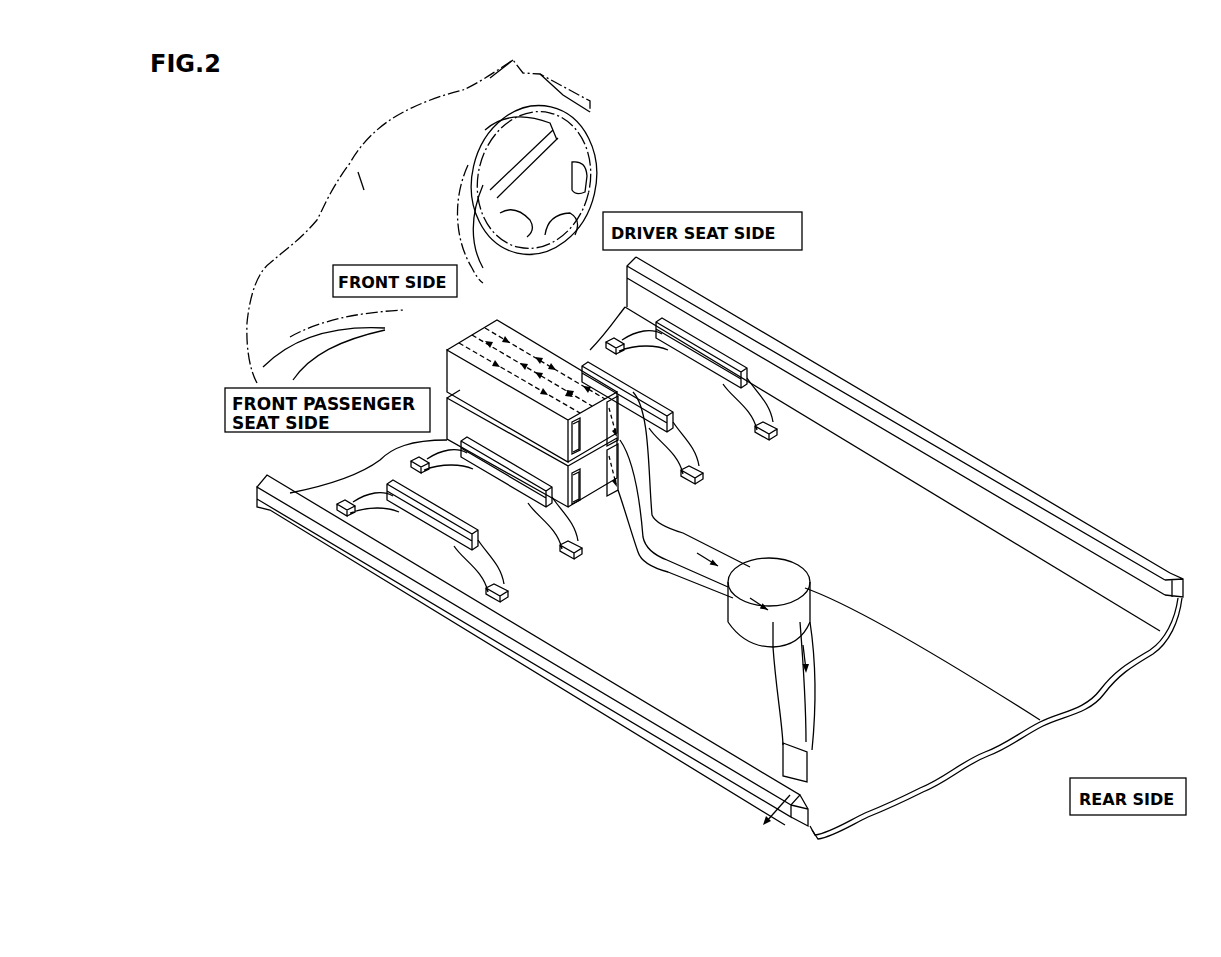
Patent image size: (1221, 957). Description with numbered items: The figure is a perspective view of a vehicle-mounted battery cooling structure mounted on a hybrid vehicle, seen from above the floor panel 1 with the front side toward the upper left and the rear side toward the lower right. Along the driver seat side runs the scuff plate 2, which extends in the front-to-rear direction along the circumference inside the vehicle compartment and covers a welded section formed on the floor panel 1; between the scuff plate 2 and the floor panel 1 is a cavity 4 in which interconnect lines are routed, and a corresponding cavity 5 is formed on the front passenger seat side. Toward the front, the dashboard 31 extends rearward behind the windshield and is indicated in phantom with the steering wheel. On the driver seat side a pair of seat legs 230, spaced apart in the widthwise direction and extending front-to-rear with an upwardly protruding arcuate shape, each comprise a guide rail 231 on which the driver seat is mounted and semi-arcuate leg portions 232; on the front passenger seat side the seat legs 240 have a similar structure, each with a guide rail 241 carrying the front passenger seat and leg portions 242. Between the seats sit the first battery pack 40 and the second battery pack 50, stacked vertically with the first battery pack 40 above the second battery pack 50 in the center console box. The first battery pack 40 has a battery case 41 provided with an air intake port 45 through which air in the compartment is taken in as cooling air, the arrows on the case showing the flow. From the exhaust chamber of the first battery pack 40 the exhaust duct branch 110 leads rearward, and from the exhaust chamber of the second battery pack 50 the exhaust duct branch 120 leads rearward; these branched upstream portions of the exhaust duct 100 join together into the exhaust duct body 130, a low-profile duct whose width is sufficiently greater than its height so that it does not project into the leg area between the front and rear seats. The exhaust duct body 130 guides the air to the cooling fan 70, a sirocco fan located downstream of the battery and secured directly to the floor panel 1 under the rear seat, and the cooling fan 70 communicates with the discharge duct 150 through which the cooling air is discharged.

The floor panel 1 is at (953, 742).
The scuff plate 2 is at (1068, 515).
The cavity 4 is at (1185, 588).
The cavity 5 is at (850, 817).
The dashboard 31 is at (348, 166).
The first battery pack 40 is at (445, 358).
The battery case 41 is at (447, 380).
The air intake port 45 is at (589, 441).
The second battery pack 50 is at (445, 437).
The cooling fan 70 is at (1037, 720).
The exhaust duct 100 is at (683, 583).
The exhaust duct branch 110 is at (650, 498).
The exhaust duct branch 120 is at (612, 494).
The exhaust duct body 130 is at (716, 578).
The discharge duct 150 is at (800, 728).
The seat leg 230 is at (723, 351).
The guide rail 231 is at (740, 360).
The leg portion 232 is at (760, 403).
The seat leg 240 is at (422, 598).
The guide rail 241 is at (443, 533).
The leg portion 242 is at (477, 537).